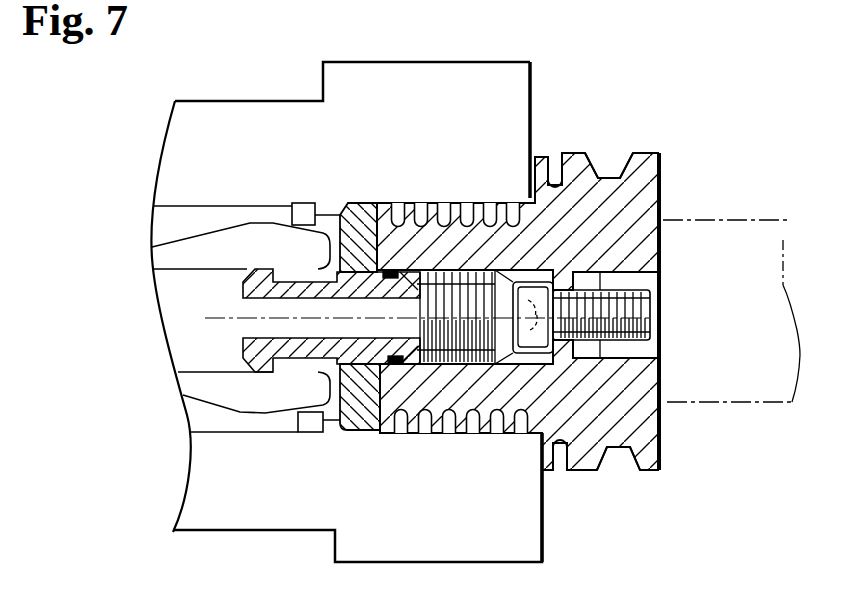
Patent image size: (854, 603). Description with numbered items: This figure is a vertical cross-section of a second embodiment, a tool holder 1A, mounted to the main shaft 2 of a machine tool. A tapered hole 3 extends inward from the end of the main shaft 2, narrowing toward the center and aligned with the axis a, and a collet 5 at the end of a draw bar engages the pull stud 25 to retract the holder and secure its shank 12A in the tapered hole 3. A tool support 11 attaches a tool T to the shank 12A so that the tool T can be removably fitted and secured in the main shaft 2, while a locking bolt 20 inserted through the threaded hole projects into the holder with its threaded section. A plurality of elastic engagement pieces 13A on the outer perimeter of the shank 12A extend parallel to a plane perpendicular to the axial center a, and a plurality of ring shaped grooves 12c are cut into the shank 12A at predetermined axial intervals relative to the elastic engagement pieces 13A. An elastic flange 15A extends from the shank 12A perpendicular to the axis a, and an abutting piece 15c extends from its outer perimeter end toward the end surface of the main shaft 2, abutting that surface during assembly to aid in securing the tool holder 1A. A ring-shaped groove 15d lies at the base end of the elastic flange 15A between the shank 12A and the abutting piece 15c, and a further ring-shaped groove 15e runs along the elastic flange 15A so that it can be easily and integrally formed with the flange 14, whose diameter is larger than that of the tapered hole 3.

The main shaft 2 is at (248, 101).
The collet 5 is at (240, 414).
The pull stud 25 is at (310, 398).
The axis a is at (233, 322).
The tapered hole 3 is at (403, 436).
The elastic engagement pieces 13A is at (506, 200).
The ring shaped grooves 12c is at (450, 440).
The shank 12A is at (482, 395).
The elastic flange 15A is at (551, 162).
The abutting piece 15c is at (530, 168).
The ring-shaped groove 15d is at (527, 184).
The ring-shaped groove 15e is at (557, 160).
The locking bolt 20 is at (647, 300).
The tool support 11 is at (654, 394).
The flange 14 is at (652, 473).
The tool T is at (760, 284).
The tool holder 1A is at (687, 123).